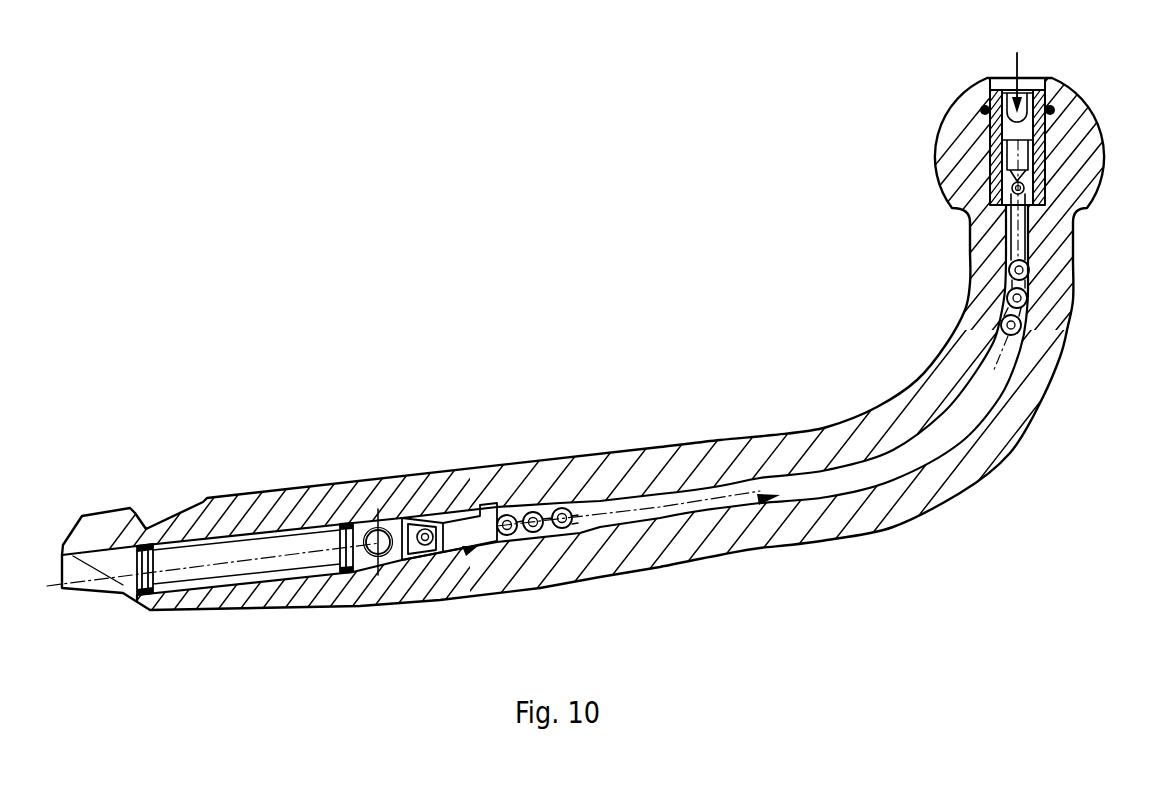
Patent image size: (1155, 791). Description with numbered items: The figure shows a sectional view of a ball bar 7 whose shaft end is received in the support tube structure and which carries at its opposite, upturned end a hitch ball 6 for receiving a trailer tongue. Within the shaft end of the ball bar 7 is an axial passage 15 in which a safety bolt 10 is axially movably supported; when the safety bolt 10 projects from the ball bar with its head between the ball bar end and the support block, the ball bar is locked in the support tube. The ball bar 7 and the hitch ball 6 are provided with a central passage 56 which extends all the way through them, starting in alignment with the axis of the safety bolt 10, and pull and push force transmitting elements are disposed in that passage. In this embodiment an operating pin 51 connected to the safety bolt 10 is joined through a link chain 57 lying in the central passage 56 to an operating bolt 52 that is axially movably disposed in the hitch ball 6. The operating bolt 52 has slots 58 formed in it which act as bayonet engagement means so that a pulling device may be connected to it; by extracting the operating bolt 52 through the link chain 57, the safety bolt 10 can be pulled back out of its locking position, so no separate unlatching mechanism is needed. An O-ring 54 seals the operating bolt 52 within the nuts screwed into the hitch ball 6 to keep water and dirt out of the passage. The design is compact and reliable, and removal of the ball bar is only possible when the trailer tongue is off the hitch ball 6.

The hitch ball 6 is at (963, 120).
The ball bar 7 is at (396, 487).
The safety bolt 10 is at (262, 548).
The axial passage 15 is at (464, 551).
The operating pin 51 is at (478, 525).
The operating bolt 52 is at (997, 160).
The O-ring 54 is at (1060, 104).
The central passage 56 is at (755, 505).
The link chain 57 is at (570, 510).
The slots 58 is at (1012, 94).